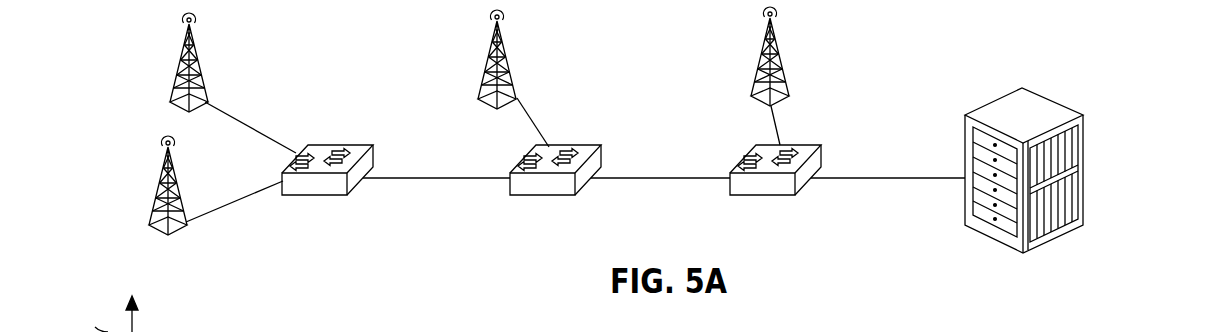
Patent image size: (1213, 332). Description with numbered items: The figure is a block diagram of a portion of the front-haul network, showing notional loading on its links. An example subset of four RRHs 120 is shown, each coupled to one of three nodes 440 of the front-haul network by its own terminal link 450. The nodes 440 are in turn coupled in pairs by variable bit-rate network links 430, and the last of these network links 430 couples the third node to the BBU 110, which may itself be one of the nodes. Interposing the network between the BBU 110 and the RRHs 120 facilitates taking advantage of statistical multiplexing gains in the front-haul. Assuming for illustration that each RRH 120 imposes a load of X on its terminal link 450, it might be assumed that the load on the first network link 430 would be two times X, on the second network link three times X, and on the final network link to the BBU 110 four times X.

The RRH 120 is at (198, 58).
The terminal link 450 is at (230, 117).
The node 440 is at (335, 195).
The network link 430 is at (410, 178).
The BBU 110 is at (1083, 160).